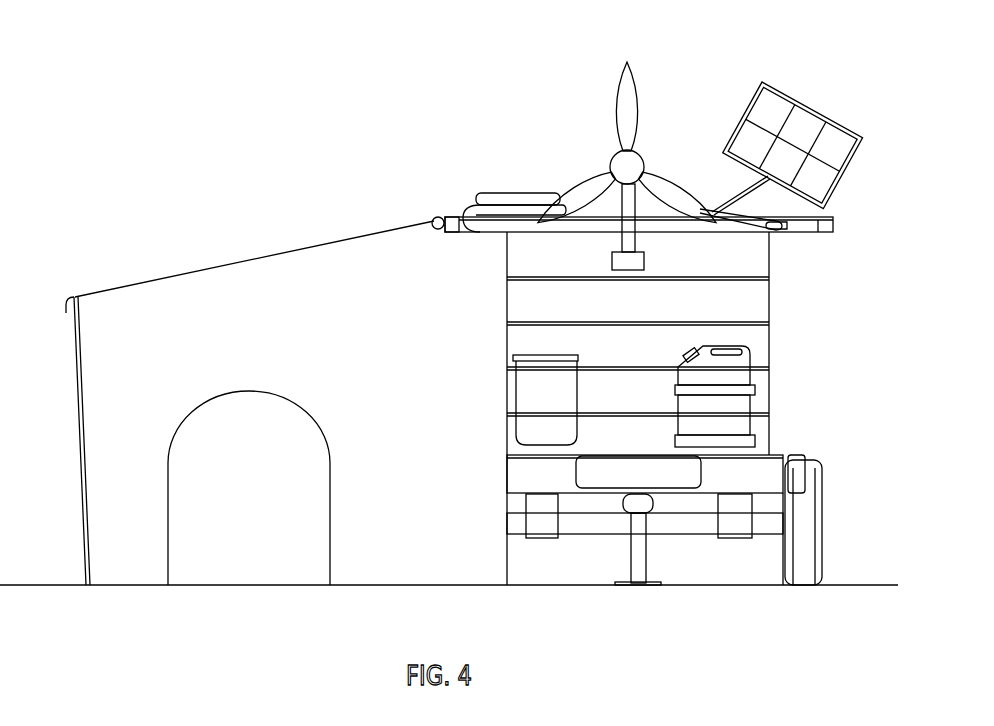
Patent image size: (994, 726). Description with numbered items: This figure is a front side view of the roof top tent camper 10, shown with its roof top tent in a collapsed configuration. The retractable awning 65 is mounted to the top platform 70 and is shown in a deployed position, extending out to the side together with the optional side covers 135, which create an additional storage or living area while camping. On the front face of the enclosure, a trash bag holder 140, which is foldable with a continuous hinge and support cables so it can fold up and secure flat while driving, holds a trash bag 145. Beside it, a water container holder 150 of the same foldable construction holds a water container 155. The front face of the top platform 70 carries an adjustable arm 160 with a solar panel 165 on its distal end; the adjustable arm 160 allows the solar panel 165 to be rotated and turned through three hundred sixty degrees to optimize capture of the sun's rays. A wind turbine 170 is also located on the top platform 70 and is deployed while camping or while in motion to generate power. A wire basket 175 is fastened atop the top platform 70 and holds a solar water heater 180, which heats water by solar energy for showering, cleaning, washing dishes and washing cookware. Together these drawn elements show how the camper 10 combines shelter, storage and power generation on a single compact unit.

The camper 10 is at (106, 139).
The retractable awning 65 is at (222, 263).
The top platform 70 is at (447, 229).
The side covers 135 is at (127, 558).
The trash bag holder 140 is at (513, 360).
The trash bag 145 is at (533, 420).
The water container holder 150 is at (750, 440).
The water container 155 is at (730, 368).
The adjustable arm 160 is at (748, 218).
The solar panel 165 is at (815, 125).
The wind turbine 170 is at (644, 261).
The wire basket 175 is at (476, 204).
The solar water heater 180 is at (496, 195).